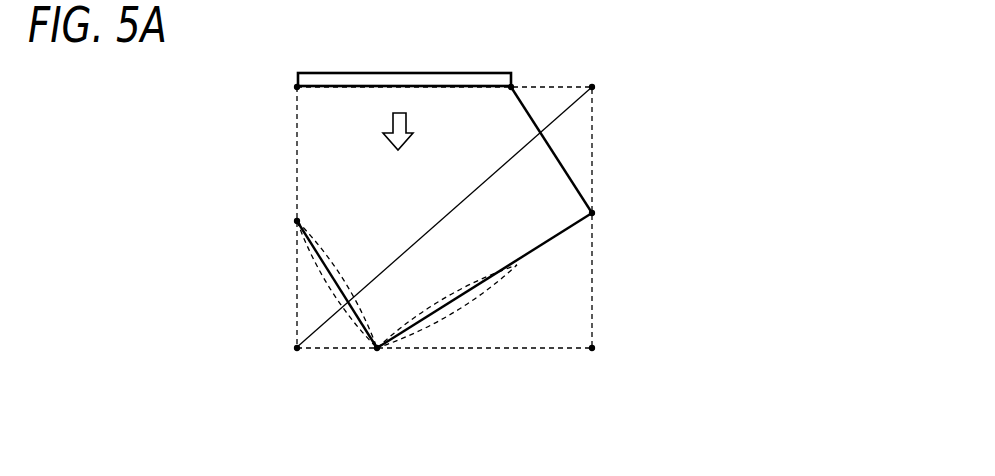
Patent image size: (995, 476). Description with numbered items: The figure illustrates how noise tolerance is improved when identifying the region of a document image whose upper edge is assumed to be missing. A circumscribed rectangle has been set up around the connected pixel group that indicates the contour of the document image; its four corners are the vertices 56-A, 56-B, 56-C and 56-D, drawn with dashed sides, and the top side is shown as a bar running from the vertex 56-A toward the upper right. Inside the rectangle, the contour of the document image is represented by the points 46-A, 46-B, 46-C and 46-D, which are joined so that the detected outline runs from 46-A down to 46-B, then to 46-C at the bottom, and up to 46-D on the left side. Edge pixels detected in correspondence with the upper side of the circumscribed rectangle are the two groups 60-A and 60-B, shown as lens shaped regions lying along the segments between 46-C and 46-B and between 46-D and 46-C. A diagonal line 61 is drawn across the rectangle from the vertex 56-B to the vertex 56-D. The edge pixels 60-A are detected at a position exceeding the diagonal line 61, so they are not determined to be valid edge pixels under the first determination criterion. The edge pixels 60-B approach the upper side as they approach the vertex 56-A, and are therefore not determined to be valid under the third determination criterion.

The reflecting surface / vertex A 46-A is at (513, 85).
The vertex B of optical path 46-B is at (594, 213).
The vertex C of optical path 46-C is at (377, 350).
The vertex D of optical path 46-D is at (296, 221).
The vertex 56-A is at (296, 88).
The corner B of reference frame 56-B is at (594, 87).
The corner C of reference frame 56-C is at (594, 348).
The corner D of reference frame 56-D is at (295, 348).
The edge pixels 60-A is at (478, 292).
The edge pixels 60-B is at (333, 258).
The diagonal line 61 is at (503, 163).